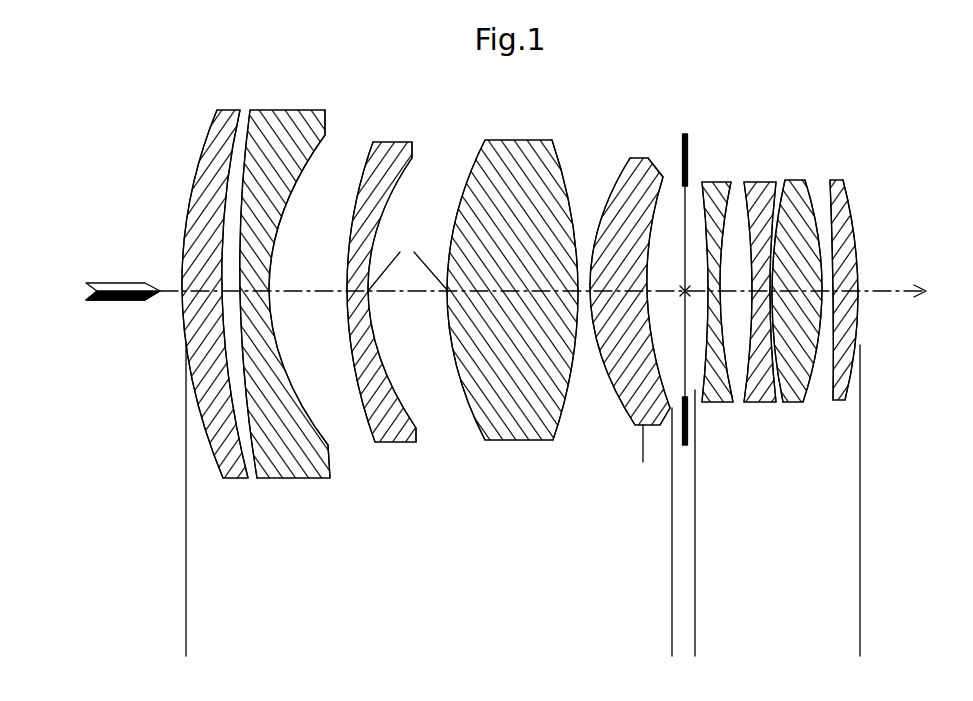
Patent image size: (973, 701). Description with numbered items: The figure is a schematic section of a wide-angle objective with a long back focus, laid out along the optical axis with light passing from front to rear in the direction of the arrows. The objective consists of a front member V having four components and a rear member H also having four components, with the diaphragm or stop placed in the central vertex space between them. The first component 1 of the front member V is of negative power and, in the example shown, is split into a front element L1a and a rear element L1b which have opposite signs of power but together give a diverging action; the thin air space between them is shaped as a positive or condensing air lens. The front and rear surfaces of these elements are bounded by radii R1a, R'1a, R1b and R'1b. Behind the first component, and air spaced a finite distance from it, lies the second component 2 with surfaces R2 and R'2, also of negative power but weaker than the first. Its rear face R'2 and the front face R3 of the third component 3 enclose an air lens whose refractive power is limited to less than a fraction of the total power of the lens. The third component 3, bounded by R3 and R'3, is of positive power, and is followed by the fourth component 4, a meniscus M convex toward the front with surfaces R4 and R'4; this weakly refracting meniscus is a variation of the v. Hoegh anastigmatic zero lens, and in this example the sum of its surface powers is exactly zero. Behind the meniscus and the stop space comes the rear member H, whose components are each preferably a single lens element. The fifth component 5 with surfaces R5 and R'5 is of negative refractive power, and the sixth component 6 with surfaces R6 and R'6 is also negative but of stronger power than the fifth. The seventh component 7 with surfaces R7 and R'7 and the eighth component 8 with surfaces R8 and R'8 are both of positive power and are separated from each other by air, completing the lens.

The first component 1 is at (259, 339).
The front element of first component L1a is at (212, 297).
The rear element of first component L1b is at (292, 304).
The front surface radius of element 1a R1a is at (216, 118).
The rear surface radius of element 1a R'1a is at (235, 266).
The front surface radius of element 1b R1b is at (275, 110).
The rear surface radius of element 1b R'1b is at (306, 273).
The second component 2 is at (384, 343).
The front surface radius of second component R2 is at (362, 158).
The rear surface radius of second component R'2 is at (394, 253).
The third component 3 is at (512, 349).
The front surface radius of third component R3 is at (484, 145).
The rear surface radius of third component R'3 is at (548, 258).
The fourth component 4 is at (625, 363).
The front surface radius of fourth component R4 is at (625, 172).
The rear surface radius of fourth component R'4 is at (651, 264).
The meniscus component M is at (642, 455).
The front member V is at (660, 654).
The fifth component 5 is at (717, 321).
The front surface radius of fifth component R5 is at (700, 186).
The rear surface radius of fifth component R'5 is at (731, 259).
The sixth component 6 is at (777, 328).
The front surface radius of sixth component R6 is at (747, 184).
The rear surface radius of sixth component R'6 is at (791, 259).
The seventh component 7 is at (828, 341).
The front surface radius of seventh component R7 is at (788, 180).
The rear surface radius of seventh component R'7 is at (844, 251).
The eighth component 8 is at (874, 392).
The front surface radius of eighth component R8 is at (832, 180).
The rear surface radius of eighth component R'8 is at (886, 290).
The rear member H is at (695, 648).